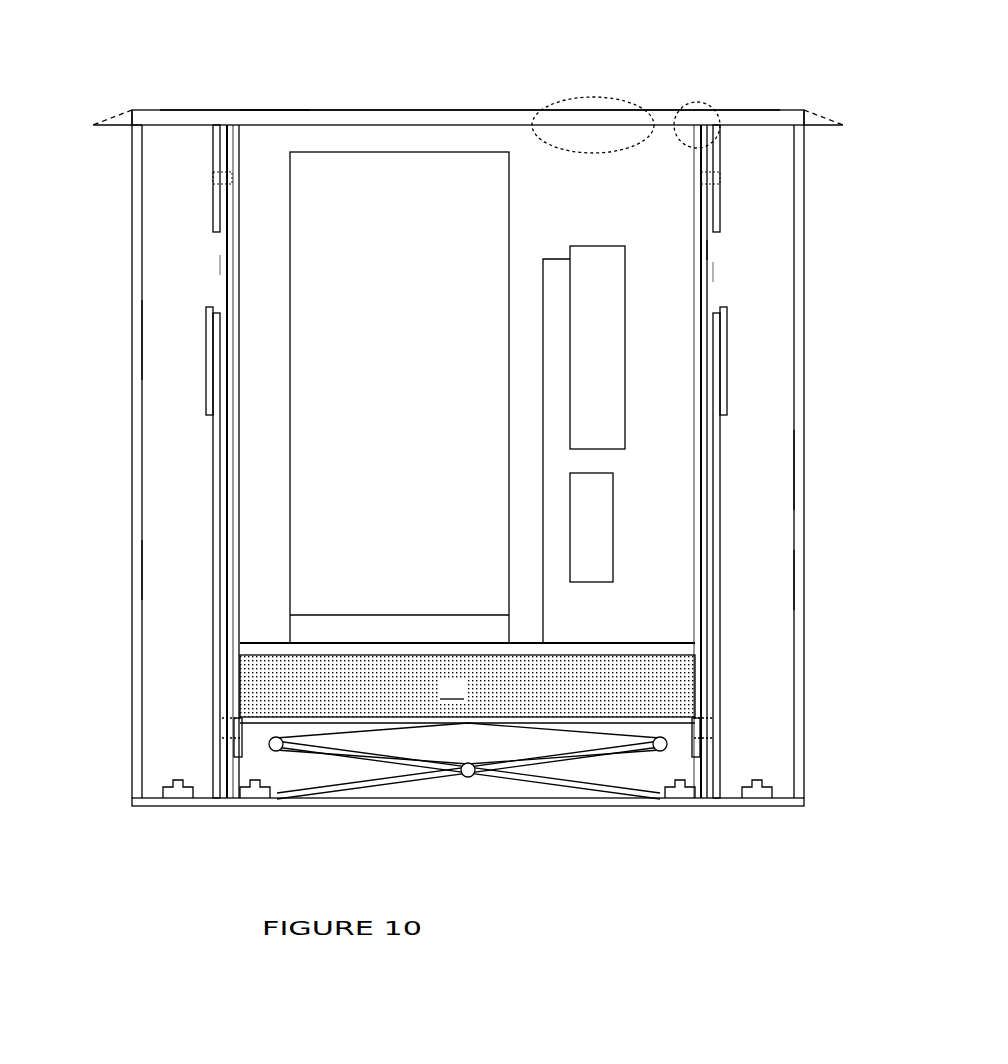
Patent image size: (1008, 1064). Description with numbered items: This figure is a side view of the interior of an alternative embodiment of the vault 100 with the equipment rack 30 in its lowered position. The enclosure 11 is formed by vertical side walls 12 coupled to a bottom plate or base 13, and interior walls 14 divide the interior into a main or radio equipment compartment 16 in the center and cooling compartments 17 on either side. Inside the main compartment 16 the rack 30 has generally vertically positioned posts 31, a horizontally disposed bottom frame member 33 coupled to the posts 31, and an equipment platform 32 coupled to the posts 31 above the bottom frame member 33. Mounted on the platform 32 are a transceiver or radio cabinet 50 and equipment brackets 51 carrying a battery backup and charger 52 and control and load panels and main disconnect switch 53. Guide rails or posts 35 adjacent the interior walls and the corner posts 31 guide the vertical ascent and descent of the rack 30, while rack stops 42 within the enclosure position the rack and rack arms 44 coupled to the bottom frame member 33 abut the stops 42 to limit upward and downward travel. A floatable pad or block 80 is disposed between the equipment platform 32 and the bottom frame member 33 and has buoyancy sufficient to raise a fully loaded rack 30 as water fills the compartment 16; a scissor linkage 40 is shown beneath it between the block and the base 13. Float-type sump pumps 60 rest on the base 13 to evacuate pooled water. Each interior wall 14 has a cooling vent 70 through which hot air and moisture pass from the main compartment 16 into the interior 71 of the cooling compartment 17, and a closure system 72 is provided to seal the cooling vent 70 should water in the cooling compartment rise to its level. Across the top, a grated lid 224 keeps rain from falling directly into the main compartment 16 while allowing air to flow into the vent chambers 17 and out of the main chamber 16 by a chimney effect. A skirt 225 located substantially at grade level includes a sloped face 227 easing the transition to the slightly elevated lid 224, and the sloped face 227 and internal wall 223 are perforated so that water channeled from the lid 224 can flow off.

The vault 100 is at (480, 29).
The enclosure 11 is at (697, 112).
The vertical side walls 12 is at (82, 266).
The bottom plate or base 13 is at (517, 800).
The interior wall 14 is at (213, 455).
The main or radio equipment compartment 16 is at (408, 128).
The cooling compartment 17 is at (152, 335).
The rack 30 is at (688, 727).
The posts 31 is at (240, 230).
The equipment platform 32 is at (590, 643).
The bottom frame member 33 is at (673, 728).
The guide rails or posts 35 is at (227, 250).
The scissor linkage 40 is at (360, 787).
The rack stops 42 is at (222, 178).
The rack arms 44 is at (232, 715).
The transceiver or radio cabinet 50 is at (370, 363).
The equipment brackets 51 is at (543, 258).
The battery backup and charger 52 is at (591, 527).
The control and load panels and main disconnect switch 53 is at (597, 347).
The sump pump 60 is at (178, 790).
The cooling vent 70 is at (220, 265).
The interior of the cooling compartment 71 is at (163, 576).
The closure system 72 is at (188, 343).
The floatable pad or block 80 is at (440, 699).
The internal wall 223 is at (136, 120).
The grated lid 224 is at (275, 110).
The skirt 225 is at (106, 130).
The sloped face 227 is at (122, 112).